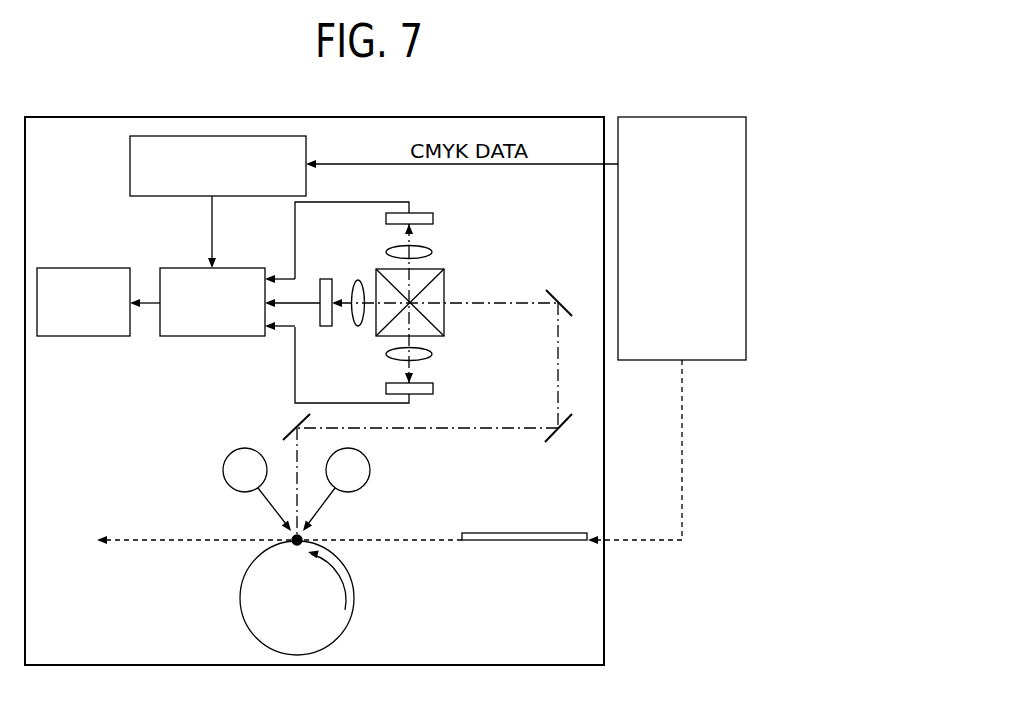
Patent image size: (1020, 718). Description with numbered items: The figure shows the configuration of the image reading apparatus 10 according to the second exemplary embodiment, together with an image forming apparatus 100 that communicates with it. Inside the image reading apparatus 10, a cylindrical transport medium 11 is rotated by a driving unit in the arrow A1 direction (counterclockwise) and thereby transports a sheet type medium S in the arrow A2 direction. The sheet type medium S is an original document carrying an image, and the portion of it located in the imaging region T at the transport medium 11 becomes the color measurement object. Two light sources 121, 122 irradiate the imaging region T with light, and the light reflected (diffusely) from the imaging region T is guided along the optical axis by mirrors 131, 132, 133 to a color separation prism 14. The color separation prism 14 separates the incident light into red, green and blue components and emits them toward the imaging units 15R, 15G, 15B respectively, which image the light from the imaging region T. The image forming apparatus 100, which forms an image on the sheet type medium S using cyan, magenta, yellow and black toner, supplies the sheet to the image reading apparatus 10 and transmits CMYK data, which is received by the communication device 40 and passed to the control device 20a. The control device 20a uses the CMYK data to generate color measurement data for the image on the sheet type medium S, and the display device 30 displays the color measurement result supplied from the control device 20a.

The image reading apparatus 10 is at (605, 613).
The transport medium 11 is at (243, 580).
The color separation prism 14 is at (445, 288).
The imaging unit 15R is at (441, 237).
The imaging unit 15G is at (349, 272).
The imaging unit 15B is at (437, 368).
The control device 20a is at (253, 268).
The display device 30 is at (113, 268).
The communication device 40 is at (130, 180).
The image forming apparatus 100 is at (657, 361).
The light source 121 is at (369, 476).
The light source 122 is at (223, 471).
The mirror 131 is at (285, 436).
The mirror 132 is at (562, 431).
The mirror 133 is at (557, 292).
The sheet type medium S is at (530, 533).
The imaging region T is at (303, 538).
The arrow A1 direction A1 is at (327, 581).
The arrow A2 direction A2 is at (265, 541).